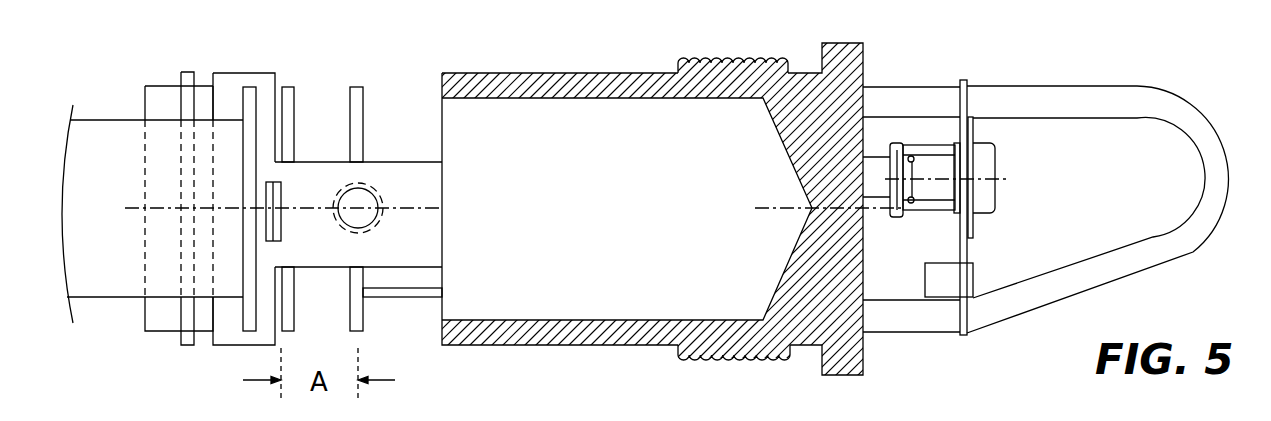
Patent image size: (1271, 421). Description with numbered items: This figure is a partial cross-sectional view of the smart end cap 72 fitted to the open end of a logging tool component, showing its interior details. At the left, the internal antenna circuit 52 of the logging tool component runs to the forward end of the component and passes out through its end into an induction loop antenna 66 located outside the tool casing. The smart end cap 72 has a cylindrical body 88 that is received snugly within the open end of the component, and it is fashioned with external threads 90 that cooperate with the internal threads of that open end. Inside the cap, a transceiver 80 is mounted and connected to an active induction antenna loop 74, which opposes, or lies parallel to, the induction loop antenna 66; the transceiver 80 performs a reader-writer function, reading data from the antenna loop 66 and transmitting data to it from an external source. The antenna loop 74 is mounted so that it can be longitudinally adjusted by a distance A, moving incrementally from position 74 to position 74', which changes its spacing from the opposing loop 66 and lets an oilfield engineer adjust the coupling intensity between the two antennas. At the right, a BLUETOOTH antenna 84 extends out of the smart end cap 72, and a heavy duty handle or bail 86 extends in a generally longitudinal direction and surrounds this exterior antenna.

The internal antenna circuit 52 is at (110, 120).
The induction loop antenna 66 is at (251, 85).
The active induction antenna loop 74 is at (389, 175).
The adjusted position of antenna loop 74' is at (253, 232).
The cylindrical body 88 is at (573, 73).
The external threads 90 is at (682, 60).
The transceiver 80 is at (627, 209).
The smart end cap 72 is at (678, 362).
The BLUETOOTH antenna 84 is at (995, 192).
The handle or bail 86 is at (1180, 258).